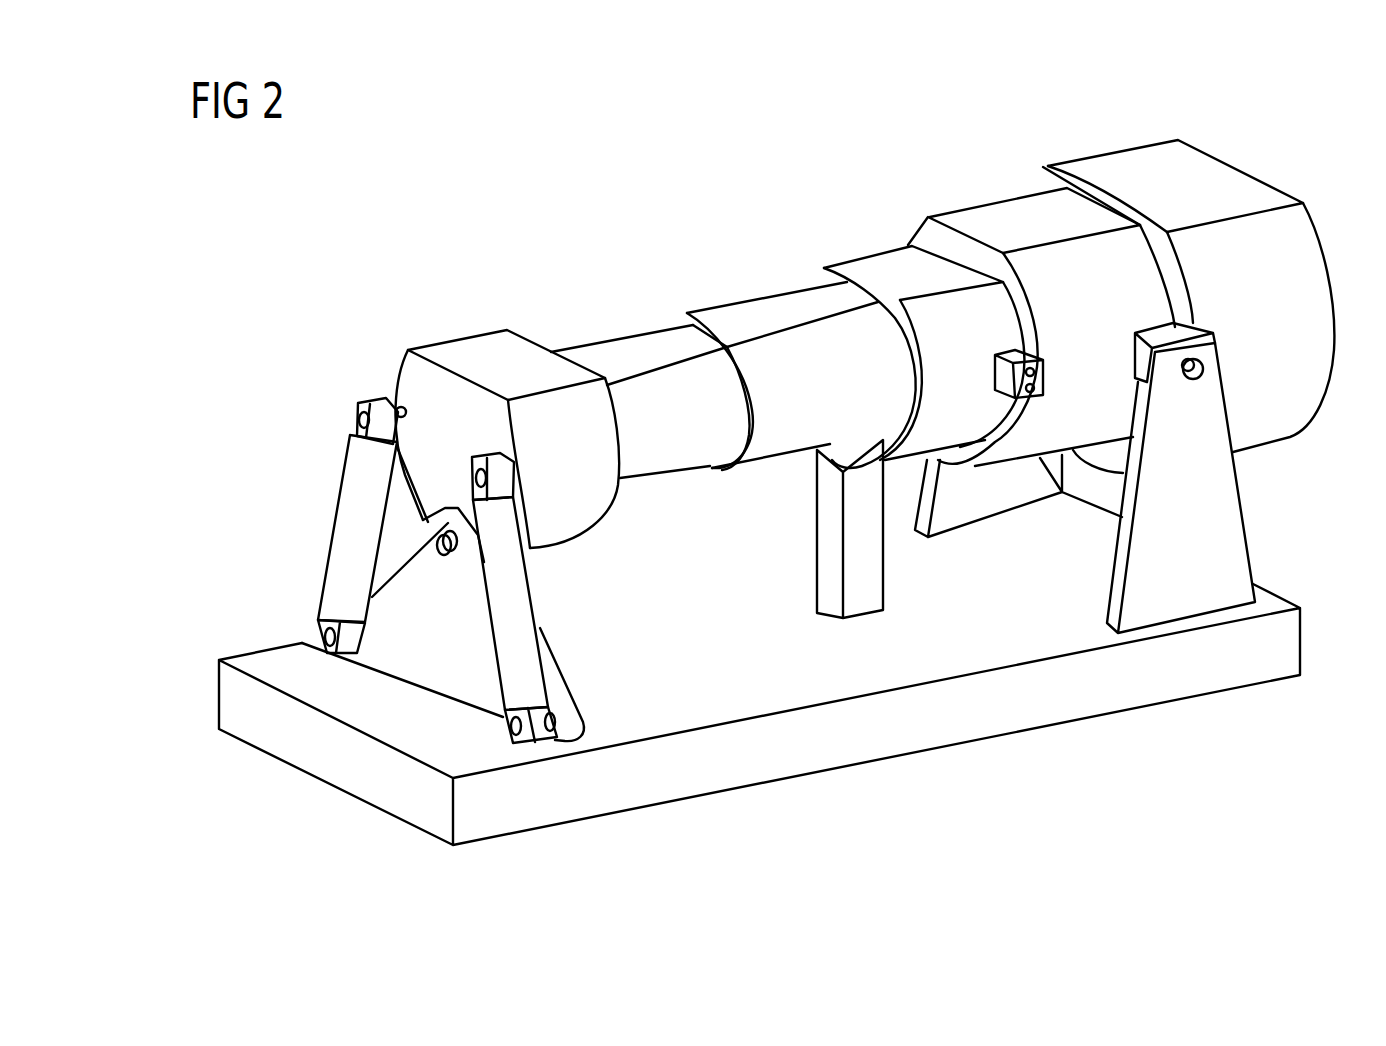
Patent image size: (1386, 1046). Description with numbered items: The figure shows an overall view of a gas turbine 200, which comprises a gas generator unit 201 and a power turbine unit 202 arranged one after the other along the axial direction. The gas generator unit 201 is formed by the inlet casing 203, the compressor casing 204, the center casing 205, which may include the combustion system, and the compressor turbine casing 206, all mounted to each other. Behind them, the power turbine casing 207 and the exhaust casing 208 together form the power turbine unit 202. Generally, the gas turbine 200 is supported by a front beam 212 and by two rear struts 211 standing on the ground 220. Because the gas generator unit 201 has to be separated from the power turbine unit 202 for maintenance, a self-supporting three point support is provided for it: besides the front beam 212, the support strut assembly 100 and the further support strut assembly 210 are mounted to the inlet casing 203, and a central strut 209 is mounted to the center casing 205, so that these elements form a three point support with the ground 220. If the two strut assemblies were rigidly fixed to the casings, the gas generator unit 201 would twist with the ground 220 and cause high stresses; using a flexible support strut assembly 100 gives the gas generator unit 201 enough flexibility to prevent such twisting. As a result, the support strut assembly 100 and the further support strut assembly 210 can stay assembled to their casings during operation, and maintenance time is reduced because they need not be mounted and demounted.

The support strut assembly 100 is at (347, 512).
The gas turbine 200 is at (272, 305).
The gas generator unit 201 is at (930, 141).
The power turbine unit 202 is at (1245, 88).
The inlet casing 203 is at (476, 345).
The compressor casing 204 is at (637, 343).
The center casing 205 is at (777, 305).
The compressor turbine casing 206 is at (897, 258).
The power turbine casing 207 is at (1008, 215).
The exhaust casing 208 is at (1233, 178).
The central strut 209 is at (872, 568).
The further support strut assembly 210 is at (525, 619).
The rear strut 211 is at (1227, 507).
The front beam 212 is at (428, 668).
The ground 220 is at (597, 802).